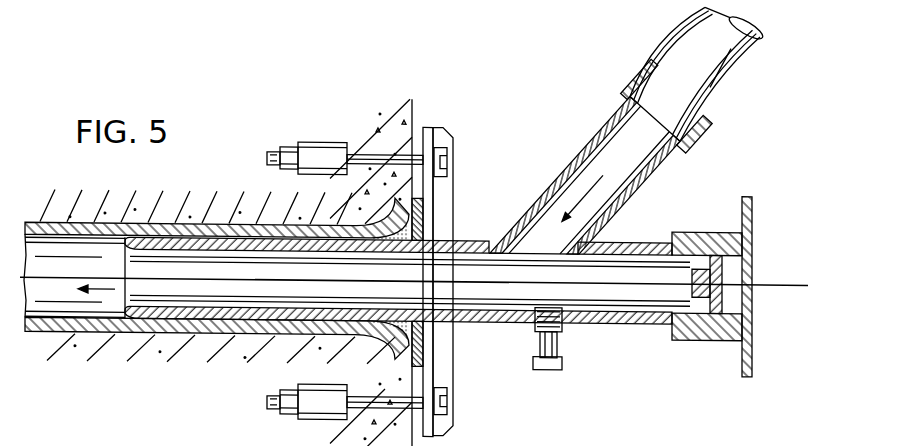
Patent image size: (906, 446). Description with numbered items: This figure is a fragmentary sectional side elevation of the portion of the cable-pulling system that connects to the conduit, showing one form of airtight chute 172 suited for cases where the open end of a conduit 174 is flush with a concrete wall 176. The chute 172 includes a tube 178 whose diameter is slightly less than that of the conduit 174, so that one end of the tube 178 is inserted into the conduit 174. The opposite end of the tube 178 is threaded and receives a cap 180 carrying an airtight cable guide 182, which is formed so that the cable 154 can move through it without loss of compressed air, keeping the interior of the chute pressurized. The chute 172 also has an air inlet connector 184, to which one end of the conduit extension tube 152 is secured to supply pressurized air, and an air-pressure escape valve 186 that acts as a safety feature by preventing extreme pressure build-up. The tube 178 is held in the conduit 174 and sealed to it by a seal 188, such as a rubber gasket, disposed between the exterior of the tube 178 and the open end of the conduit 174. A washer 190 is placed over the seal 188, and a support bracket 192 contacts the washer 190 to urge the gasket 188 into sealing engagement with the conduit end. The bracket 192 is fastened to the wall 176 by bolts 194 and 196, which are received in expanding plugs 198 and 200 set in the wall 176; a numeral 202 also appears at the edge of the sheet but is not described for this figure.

The tube 152 is at (748, 72).
The cable 154 is at (787, 283).
The airtight chute 172 is at (573, 68).
The conduit 174 is at (163, 221).
The concrete wall 176 is at (413, 113).
The tube 178 is at (517, 321).
The cap 180 is at (747, 196).
The airtight cable guide 182 is at (719, 228).
The air inlet connector 184 is at (592, 148).
The air-pressure escape valve 186 is at (555, 348).
The seal 188 is at (417, 227).
The washer 190 is at (420, 366).
The support bracket 192 is at (450, 138).
The bolt 194 is at (365, 407).
The bolt 196 is at (357, 151).
The expanding plug 198 is at (322, 413).
The expanding plug 200 is at (318, 139).
The element of FIG. 6 202 is at (703, 436).